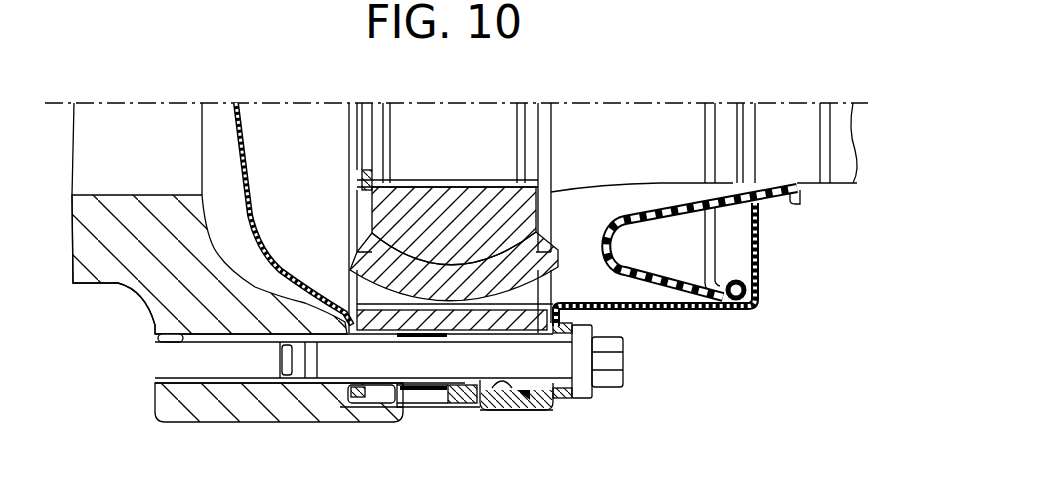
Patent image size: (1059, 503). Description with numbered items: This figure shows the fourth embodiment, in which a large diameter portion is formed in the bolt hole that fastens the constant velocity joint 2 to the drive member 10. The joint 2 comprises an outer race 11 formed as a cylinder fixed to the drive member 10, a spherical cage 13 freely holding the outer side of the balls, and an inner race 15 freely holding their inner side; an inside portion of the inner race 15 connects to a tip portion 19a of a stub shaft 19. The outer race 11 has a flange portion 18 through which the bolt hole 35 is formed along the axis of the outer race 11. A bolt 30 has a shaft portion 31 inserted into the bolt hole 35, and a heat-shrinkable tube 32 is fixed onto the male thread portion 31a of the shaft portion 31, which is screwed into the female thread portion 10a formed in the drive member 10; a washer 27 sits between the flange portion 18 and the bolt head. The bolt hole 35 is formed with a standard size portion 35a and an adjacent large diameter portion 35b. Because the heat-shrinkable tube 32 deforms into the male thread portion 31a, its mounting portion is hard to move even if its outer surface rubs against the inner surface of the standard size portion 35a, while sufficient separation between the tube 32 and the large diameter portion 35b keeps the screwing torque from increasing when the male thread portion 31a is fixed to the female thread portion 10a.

The constant velocity joint 2 is at (683, 322).
The drive member 10 is at (193, 410).
The female thread portion 10a is at (152, 338).
The outer race 11 is at (428, 333).
The spherical cage 13 is at (522, 250).
The inner race 15 is at (412, 200).
The flange portion 18 is at (462, 403).
The stub shaft 19 is at (662, 118).
The tip portion 19a is at (465, 118).
The washer 27 is at (565, 402).
The bolt 30 is at (540, 410).
The shaft portion 31 is at (290, 374).
The male thread portion 31a is at (330, 374).
The heat-shrinkable tube 32 is at (410, 388).
The bolt hole 35 is at (497, 390).
The standard size portion 35a is at (520, 402).
The large diameter portion 35b is at (363, 395).